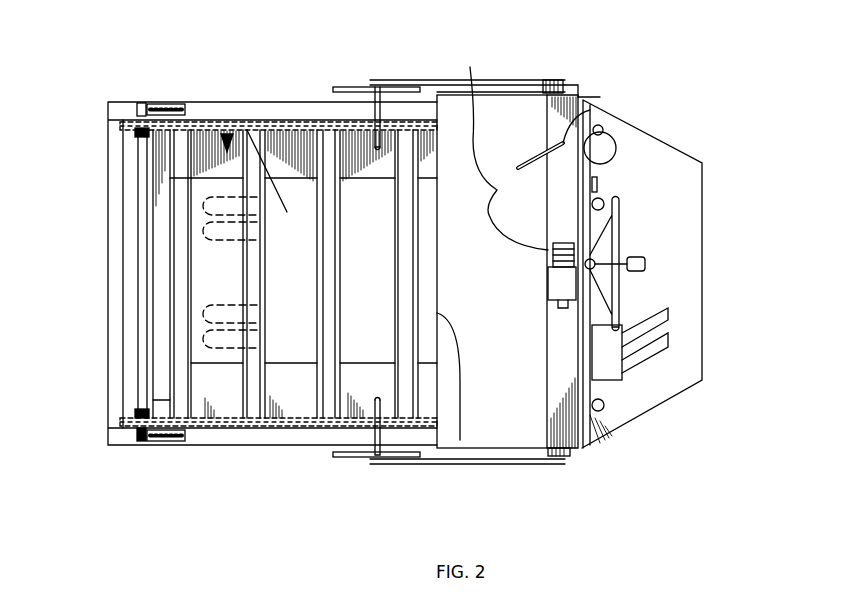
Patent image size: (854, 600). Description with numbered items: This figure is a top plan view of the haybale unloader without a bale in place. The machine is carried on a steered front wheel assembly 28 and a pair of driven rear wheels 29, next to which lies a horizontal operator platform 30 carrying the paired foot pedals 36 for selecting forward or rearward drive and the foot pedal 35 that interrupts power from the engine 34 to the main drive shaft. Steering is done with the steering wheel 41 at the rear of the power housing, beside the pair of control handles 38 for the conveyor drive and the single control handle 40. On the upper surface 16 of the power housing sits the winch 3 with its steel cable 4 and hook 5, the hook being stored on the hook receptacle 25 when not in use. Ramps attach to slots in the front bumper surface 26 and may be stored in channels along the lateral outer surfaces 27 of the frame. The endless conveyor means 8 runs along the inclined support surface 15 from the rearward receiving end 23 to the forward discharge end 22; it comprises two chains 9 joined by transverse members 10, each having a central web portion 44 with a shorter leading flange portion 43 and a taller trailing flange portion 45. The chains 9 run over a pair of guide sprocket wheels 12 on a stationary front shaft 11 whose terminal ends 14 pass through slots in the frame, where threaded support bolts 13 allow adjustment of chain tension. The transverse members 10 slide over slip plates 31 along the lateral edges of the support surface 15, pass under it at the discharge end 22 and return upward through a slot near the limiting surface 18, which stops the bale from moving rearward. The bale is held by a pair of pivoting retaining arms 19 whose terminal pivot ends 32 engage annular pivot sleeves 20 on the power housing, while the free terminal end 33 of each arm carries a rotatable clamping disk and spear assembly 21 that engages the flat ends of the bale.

The winch 3 is at (600, 380).
The steel cable 4 is at (500, 149).
The hook 5 is at (538, 210).
The endless conveyor means 8 is at (227, 130).
The chains 9 is at (283, 125).
The transverse members 10 is at (176, 420).
The front shaft 11 is at (140, 203).
The guide sprocket wheels 12 is at (143, 128).
The threaded support bolts 13 is at (155, 108).
The terminal ends 14 is at (143, 107).
The support surface 15 is at (247, 130).
The upper surface 16 is at (567, 118).
The limiting surface 18 is at (512, 383).
The retaining arms 19 is at (485, 80).
The annular pivot sleeves 20 is at (567, 83).
The clamping disk and spear assembly 21 is at (348, 88).
The discharge end 22 is at (132, 285).
The receiving end 23 is at (460, 400).
The hook receptacle 25 is at (587, 100).
The front bumper surface 26 is at (108, 243).
The lateral outer surfaces 27 is at (322, 107).
The steered front wheel assembly 28 is at (200, 342).
The driven rear wheels 29 is at (563, 0).
The operator platform 30 is at (680, 237).
The slip plates 31 is at (297, 127).
The terminal pivot ends 32 is at (543, 80).
The free terminal end 33 is at (397, 88).
The engine 34 is at (616, 152).
The foot pedal 35 is at (645, 266).
The paired foot pedals 36 is at (668, 348).
The control handles 38 is at (603, 130).
The control handle 40 is at (613, 210).
The steering wheel 41 is at (620, 220).
The leading flange portion 43 is at (245, 380).
The central web portion 44 is at (258, 380).
The trailing flange portion 45 is at (282, 380).